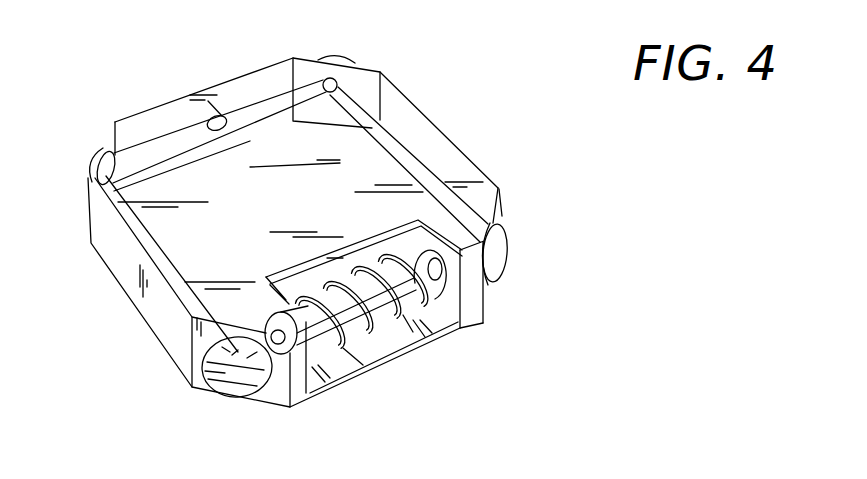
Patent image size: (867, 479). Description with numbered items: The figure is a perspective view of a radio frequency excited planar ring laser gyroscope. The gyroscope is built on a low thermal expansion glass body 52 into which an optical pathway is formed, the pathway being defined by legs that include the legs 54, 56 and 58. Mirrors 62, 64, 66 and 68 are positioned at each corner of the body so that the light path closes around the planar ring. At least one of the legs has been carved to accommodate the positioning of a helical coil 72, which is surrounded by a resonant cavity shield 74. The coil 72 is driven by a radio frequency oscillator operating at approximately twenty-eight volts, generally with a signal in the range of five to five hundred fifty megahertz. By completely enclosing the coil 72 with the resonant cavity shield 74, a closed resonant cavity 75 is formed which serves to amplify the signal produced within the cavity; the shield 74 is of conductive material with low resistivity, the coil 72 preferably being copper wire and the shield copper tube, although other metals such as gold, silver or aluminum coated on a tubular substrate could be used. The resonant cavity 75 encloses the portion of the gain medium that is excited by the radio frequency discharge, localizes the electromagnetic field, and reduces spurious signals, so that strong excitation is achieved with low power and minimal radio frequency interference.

The low thermal expansion glass body 52 is at (130, 278).
The leg 54 is at (410, 160).
The leg 56 is at (265, 111).
The leg 58 is at (139, 229).
The mirror 62 is at (498, 252).
The mirror 64 is at (355, 56).
The mirror 66 is at (80, 160).
The mirror 68 is at (225, 378).
The helical coil 72 is at (432, 300).
The resonant cavity shield 74 is at (305, 380).
The resonant cavity 75 is at (367, 347).